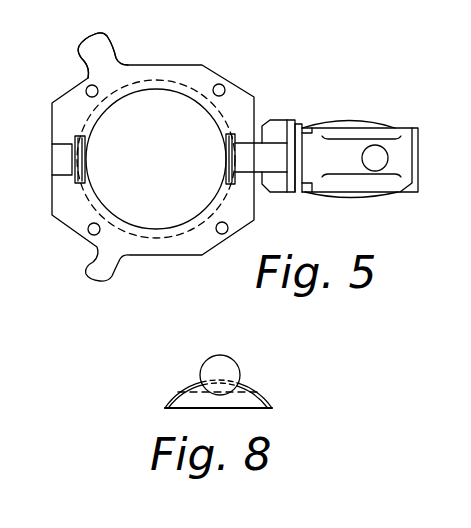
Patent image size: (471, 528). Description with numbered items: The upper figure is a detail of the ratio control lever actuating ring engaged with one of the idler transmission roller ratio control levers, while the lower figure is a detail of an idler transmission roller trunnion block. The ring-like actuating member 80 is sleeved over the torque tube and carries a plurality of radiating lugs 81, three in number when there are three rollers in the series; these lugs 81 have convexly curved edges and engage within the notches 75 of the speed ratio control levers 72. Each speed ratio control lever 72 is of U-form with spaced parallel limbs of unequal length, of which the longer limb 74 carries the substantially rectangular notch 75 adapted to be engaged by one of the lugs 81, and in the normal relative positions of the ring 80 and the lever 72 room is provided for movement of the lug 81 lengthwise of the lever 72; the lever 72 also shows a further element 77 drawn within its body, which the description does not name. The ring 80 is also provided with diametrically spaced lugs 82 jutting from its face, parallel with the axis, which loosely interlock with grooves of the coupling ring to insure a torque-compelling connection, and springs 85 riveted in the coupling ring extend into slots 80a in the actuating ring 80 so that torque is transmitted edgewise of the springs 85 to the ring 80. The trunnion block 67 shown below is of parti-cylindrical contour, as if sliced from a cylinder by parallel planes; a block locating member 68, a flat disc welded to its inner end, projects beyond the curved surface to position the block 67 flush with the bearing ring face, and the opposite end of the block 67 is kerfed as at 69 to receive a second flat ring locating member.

In FIG. 5, the ring-like actuating member 80 is at (153, 157).
In FIG. 5, the slots 80a is at (225, 152).
In FIG. 5, the radiating lugs 81 is at (101, 44).
In FIG. 5, the diametrically spaced lugs 82 is at (60, 156).
In FIG. 5, the springs 85 is at (83, 168).
In FIG. 5, the speed ratio control lever 72 is at (405, 157).
In FIG. 5, the longer limb 74 is at (307, 140).
In FIG. 5, the rectangular notch 75 is at (285, 168).
In FIG. 5, the retaining members 77 is at (348, 178).
In FIG. 8, the trunnion block 67 is at (256, 402).
In FIG. 8, the block locating member 68 is at (222, 365).
In FIG. 8, the kerf 69 is at (245, 381).